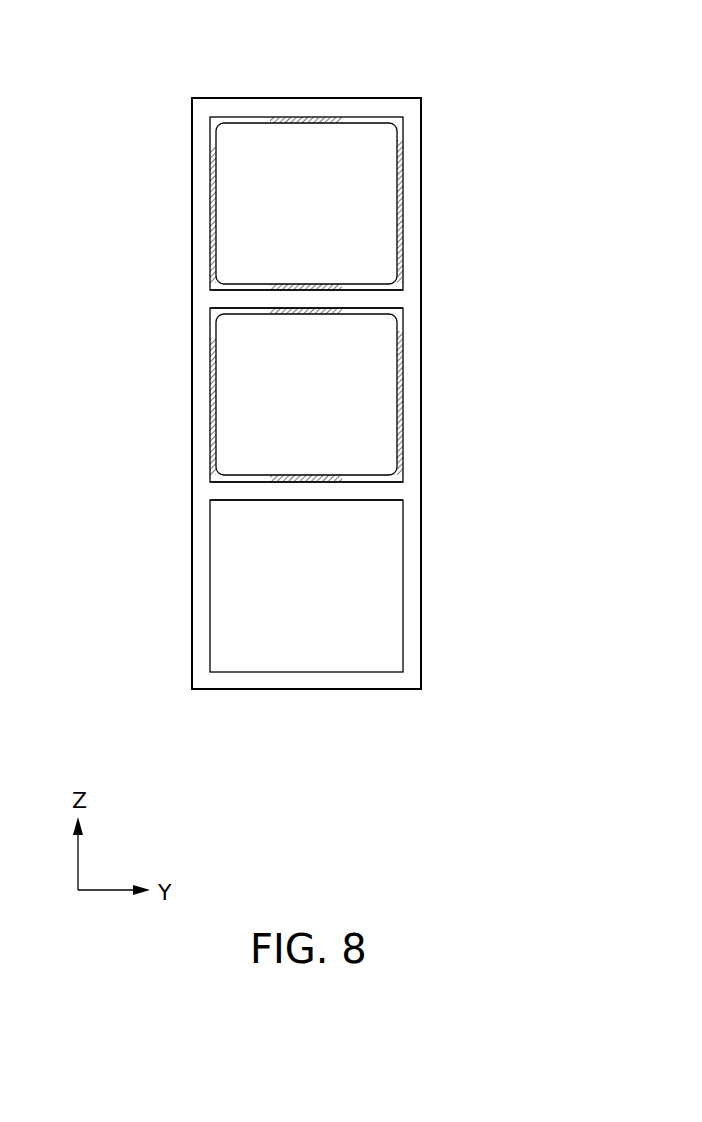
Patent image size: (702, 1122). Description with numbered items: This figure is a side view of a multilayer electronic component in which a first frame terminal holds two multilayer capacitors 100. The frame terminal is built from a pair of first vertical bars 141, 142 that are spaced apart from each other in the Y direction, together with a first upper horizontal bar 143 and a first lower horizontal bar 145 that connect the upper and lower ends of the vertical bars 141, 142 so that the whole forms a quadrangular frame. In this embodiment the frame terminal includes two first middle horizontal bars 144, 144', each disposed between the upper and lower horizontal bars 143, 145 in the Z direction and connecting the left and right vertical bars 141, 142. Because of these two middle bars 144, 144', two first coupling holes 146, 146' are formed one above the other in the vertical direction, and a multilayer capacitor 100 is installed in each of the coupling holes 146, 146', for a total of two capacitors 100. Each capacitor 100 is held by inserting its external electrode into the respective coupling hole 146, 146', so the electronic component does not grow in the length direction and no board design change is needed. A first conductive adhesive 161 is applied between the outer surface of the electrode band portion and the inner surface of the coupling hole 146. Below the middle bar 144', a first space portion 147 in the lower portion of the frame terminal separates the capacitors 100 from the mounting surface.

The multilayer capacitor 100 is at (222, 151).
The first vertical bar 141 is at (200, 570).
The first vertical bar 142 is at (413, 572).
The first upper horizontal bar 143 is at (319, 106).
The first middle horizontal bar 144 is at (367, 296).
The first middle horizontal bar 144' is at (384, 493).
The first lower horizontal bar 145 is at (353, 680).
The first coupling hole 146 is at (369, 203).
The first coupling hole 146' is at (375, 394).
The first space portion 147 is at (284, 620).
The first conductive adhesive 161 is at (400, 207).